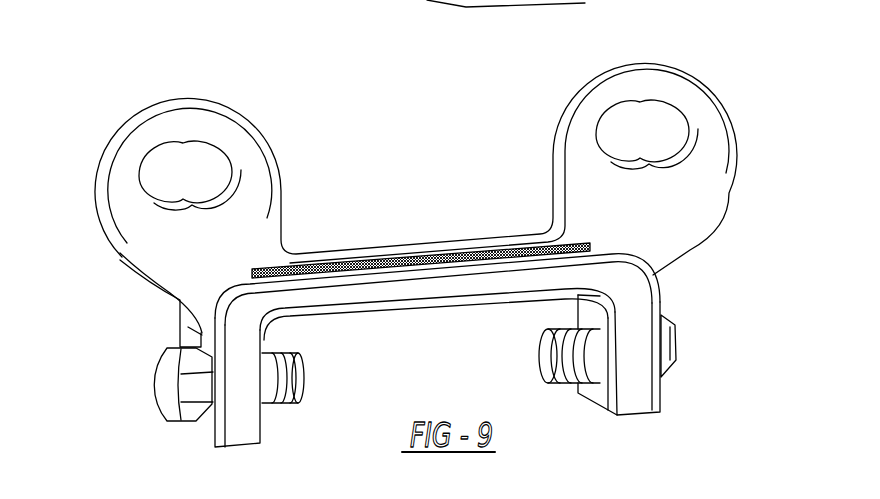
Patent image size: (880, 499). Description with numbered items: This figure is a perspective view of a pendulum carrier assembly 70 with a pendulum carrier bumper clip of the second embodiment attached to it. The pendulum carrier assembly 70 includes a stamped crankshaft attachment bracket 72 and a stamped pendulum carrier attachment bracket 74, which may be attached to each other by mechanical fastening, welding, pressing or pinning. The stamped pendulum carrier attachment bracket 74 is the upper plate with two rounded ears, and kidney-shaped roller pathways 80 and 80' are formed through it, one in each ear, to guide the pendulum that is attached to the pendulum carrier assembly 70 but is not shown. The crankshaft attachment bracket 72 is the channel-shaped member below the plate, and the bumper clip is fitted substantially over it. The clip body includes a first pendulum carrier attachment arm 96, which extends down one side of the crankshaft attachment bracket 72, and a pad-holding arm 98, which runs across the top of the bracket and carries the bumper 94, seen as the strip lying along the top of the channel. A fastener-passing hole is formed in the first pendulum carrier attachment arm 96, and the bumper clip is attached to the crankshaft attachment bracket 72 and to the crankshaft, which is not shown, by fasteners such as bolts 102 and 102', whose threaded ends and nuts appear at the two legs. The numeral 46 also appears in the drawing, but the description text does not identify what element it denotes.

The pendulum carrier assembly 70 is at (381, 135).
The stamped pendulum carrier attachment bracket 74 is at (223, 127).
The kidney-shaped roller pathway 80 is at (177, 132).
The kidney-shaped roller pathway 80' is at (657, 84).
The bumper 94 is at (434, 263).
The pad-holding arm 98 is at (392, 281).
The stamped crankshaft attachment bracket 72 is at (242, 416).
The first pendulum carrier attachment arm 96 is at (660, 397).
The fastener bolt 46 is at (208, 423).
The bolt 102 is at (137, 384).
The bolt 102' is at (697, 315).